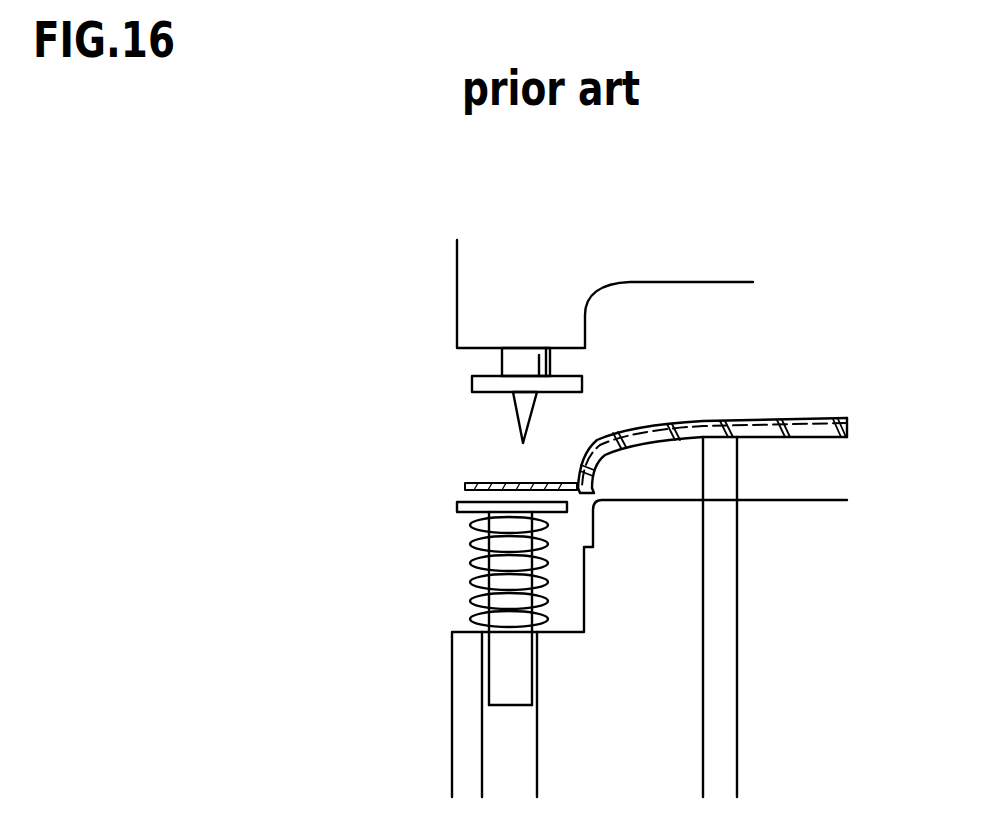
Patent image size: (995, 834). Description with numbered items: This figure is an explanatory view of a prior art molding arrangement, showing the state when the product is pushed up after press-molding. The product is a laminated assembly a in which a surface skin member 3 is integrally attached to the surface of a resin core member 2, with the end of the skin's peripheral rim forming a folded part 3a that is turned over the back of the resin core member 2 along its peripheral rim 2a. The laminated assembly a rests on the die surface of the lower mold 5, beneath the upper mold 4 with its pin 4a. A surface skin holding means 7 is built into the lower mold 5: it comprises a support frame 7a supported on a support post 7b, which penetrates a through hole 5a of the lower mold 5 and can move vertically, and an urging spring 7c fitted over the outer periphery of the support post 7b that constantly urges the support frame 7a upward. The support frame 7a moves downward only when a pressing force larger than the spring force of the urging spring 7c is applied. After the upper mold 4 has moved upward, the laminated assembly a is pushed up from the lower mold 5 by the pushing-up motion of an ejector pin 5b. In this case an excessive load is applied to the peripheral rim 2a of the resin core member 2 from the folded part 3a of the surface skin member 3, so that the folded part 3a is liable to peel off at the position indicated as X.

The resin core member 2 is at (812, 430).
The peripheral rim of the resin core member 2a is at (590, 498).
The surface skin member 3 is at (818, 418).
The folded part of the surface skin member 3a is at (506, 483).
The upper mold 4 is at (480, 284).
The horn pin 4a is at (521, 404).
The lower mold 5 is at (602, 617).
The through hole 5a is at (517, 742).
The ejector pin 5b is at (725, 608).
The surface skin holding means 7 is at (493, 597).
The support frame 7a is at (460, 502).
The support post 7b is at (520, 657).
The urging spring 7c is at (546, 581).
The laminated assembly a is at (747, 405).
The position of peeling X is at (565, 495).